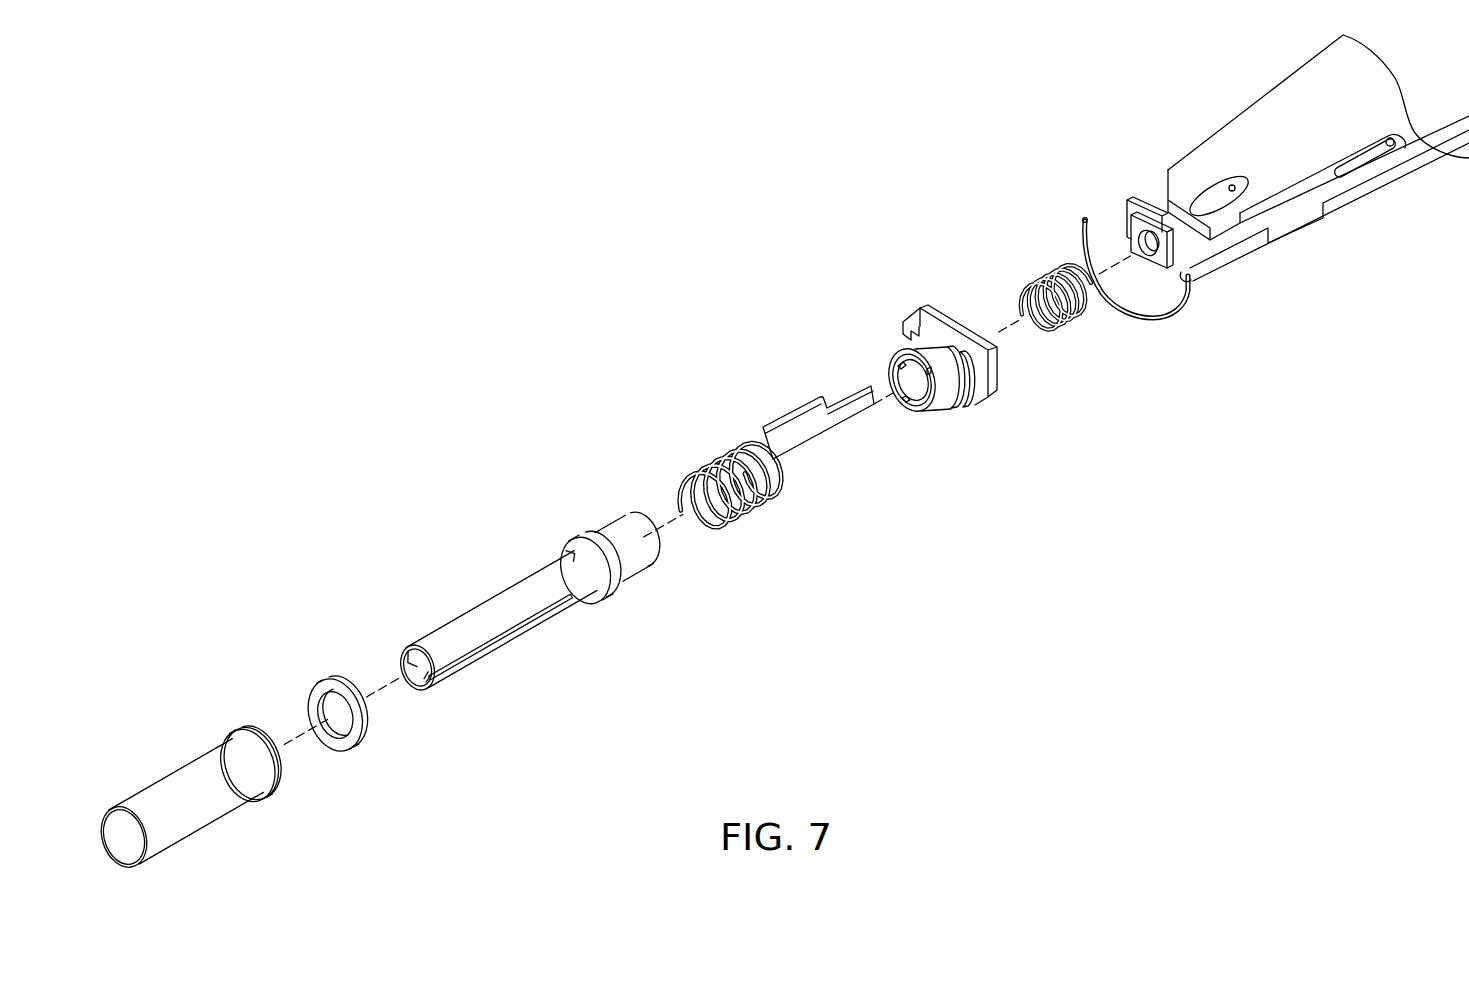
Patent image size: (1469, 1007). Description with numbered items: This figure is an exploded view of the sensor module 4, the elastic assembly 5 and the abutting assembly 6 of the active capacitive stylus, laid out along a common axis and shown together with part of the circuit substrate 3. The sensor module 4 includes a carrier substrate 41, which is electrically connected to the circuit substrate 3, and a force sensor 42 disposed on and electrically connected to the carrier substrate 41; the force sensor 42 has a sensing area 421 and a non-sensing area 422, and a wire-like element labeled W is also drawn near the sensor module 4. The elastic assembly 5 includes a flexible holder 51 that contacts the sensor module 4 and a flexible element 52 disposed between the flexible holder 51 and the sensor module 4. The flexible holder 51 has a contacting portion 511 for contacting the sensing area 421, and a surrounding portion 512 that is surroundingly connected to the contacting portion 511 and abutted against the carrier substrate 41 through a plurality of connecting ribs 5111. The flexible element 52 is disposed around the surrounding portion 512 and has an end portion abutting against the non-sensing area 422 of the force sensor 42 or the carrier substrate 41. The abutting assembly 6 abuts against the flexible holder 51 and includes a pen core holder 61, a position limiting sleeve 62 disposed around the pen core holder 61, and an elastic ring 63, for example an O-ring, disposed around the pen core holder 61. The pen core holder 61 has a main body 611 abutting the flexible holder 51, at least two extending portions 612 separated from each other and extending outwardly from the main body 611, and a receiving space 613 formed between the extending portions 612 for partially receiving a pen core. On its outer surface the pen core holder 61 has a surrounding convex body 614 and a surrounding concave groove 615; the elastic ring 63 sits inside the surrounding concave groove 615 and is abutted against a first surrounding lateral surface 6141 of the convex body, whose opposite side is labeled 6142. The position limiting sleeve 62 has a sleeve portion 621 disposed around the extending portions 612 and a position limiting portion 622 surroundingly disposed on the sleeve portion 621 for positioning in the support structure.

The circuit substrate 3 is at (1237, 123).
The sensor module 4 is at (1160, 127).
The carrier substrate 41 is at (1138, 203).
The force sensor 42 is at (1133, 222).
The sensing area 421 is at (1150, 250).
The non-sensing area 422 is at (1164, 270).
The wire W is at (1154, 318).
The elastic assembly 5 is at (1025, 207).
The flexible holder 51 is at (942, 328).
The contacting portion 511 is at (918, 386).
The connecting ribs 5111 is at (888, 366).
The surrounding portion 512 is at (987, 389).
The flexible element 52 is at (1033, 280).
The abutting assembly 6 is at (437, 560).
The pen core holder 61 is at (442, 637).
The main body 611 is at (615, 541).
The extending portions 612 is at (502, 607).
The receiving space 613 is at (430, 677).
The surrounding convex body 614 is at (616, 592).
The first surrounding lateral surface 6141 is at (582, 604).
The collar rear face 6142 is at (616, 564).
The surrounding concave groove 615 is at (578, 557).
The position limiting sleeve 62 is at (307, 600).
The sleeve portion 621 is at (207, 767).
The position limiting portion 622 is at (270, 733).
The elastic ring 63 is at (347, 677).